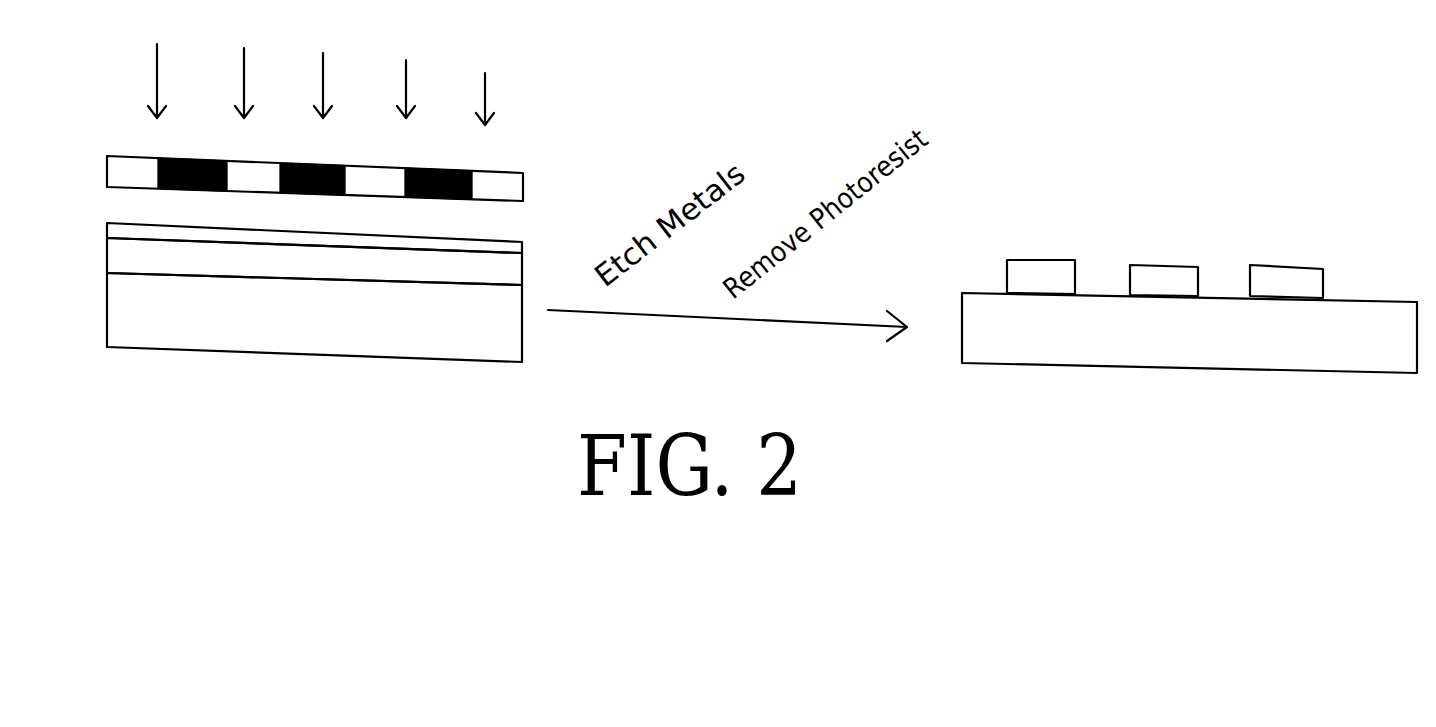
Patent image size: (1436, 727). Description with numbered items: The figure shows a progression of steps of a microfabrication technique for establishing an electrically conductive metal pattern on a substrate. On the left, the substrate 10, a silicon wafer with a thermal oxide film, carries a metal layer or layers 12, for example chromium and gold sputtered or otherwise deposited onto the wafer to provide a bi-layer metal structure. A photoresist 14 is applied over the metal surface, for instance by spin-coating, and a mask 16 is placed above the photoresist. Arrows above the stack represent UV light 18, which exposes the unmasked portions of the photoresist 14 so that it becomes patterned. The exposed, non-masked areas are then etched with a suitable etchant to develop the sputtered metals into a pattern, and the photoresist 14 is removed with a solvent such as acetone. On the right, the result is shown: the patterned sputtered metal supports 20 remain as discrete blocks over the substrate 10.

The substrate 10 is at (522, 337).
The metal layer 12 is at (513, 273).
The photoresist 14 is at (520, 242).
The mask 16 is at (512, 182).
The UV light 18 is at (487, 82).
The patterned sputtered metal support 20 is at (1035, 268).